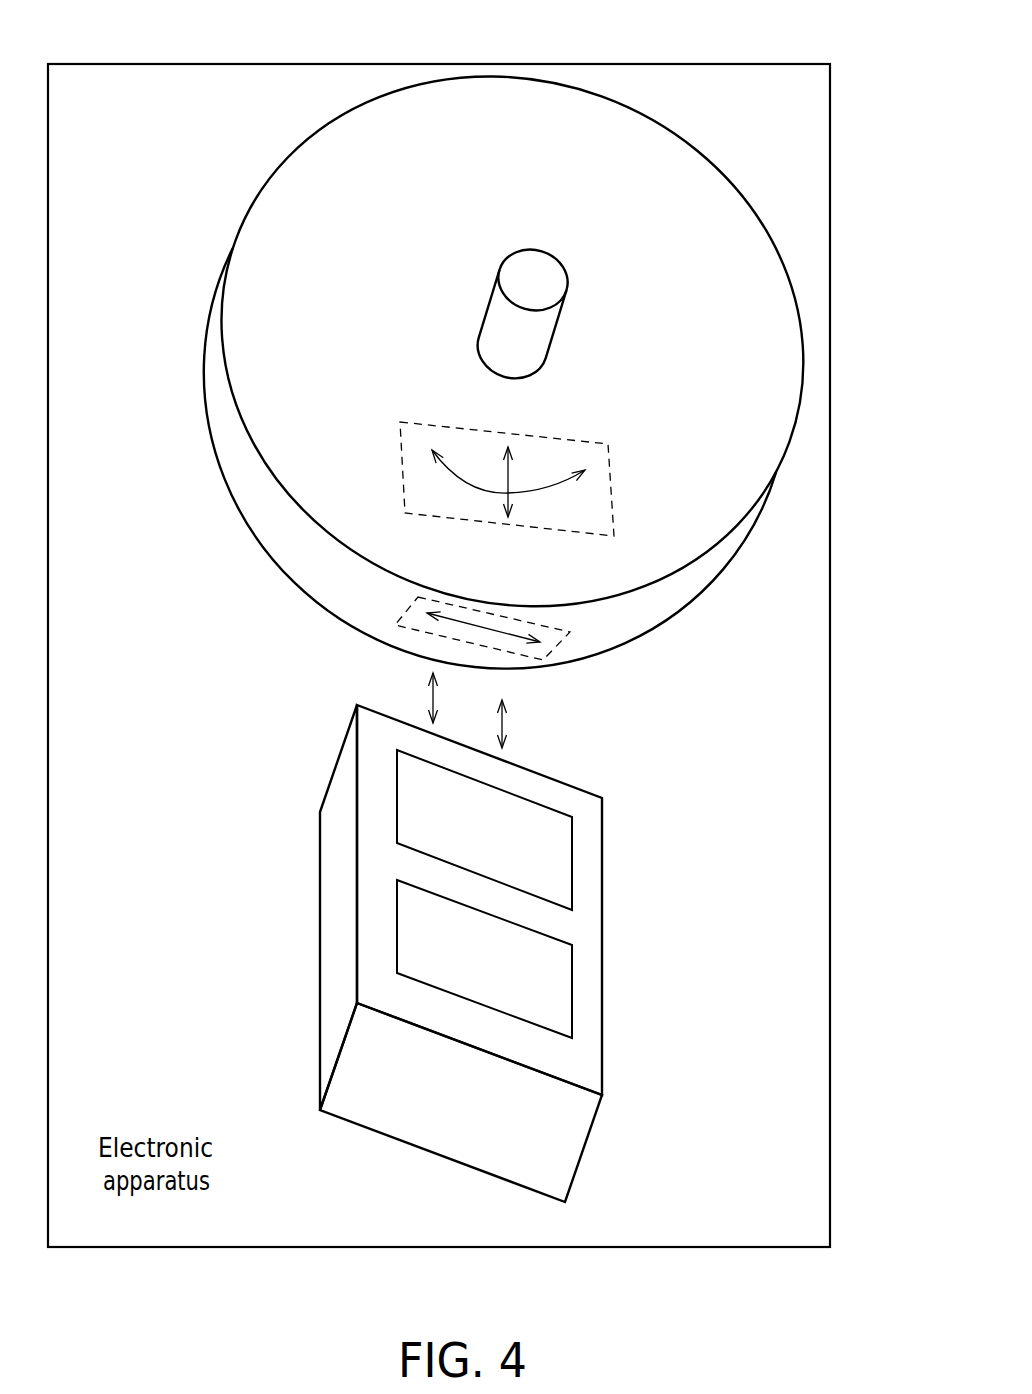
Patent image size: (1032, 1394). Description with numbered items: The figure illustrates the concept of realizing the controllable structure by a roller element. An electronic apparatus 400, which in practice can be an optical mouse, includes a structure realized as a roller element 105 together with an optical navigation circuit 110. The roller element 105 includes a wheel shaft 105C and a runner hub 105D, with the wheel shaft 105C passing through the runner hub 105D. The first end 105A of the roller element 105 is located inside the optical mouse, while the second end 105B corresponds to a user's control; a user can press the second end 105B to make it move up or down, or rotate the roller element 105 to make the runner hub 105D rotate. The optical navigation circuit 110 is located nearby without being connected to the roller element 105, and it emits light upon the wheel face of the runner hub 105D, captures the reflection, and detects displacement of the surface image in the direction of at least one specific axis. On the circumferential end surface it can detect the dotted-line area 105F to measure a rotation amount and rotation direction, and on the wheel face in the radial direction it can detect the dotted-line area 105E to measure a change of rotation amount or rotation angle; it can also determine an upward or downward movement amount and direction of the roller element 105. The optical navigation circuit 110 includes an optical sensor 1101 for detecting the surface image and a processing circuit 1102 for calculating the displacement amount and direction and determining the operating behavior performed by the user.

The electronic apparatus 400 is at (830, 205).
The roller element 105 is at (245, 172).
The second end 105B is at (582, 90).
The runner hub 105D is at (763, 388).
The wheel shaft 105C is at (482, 308).
The dotted-line area 105E is at (430, 422).
The dotted-line area 105F is at (413, 608).
The first end 105A is at (439, 677).
The optical navigation circuit 110 is at (504, 953).
The optical sensor 1101 is at (572, 853).
The processing circuit 1102 is at (572, 983).